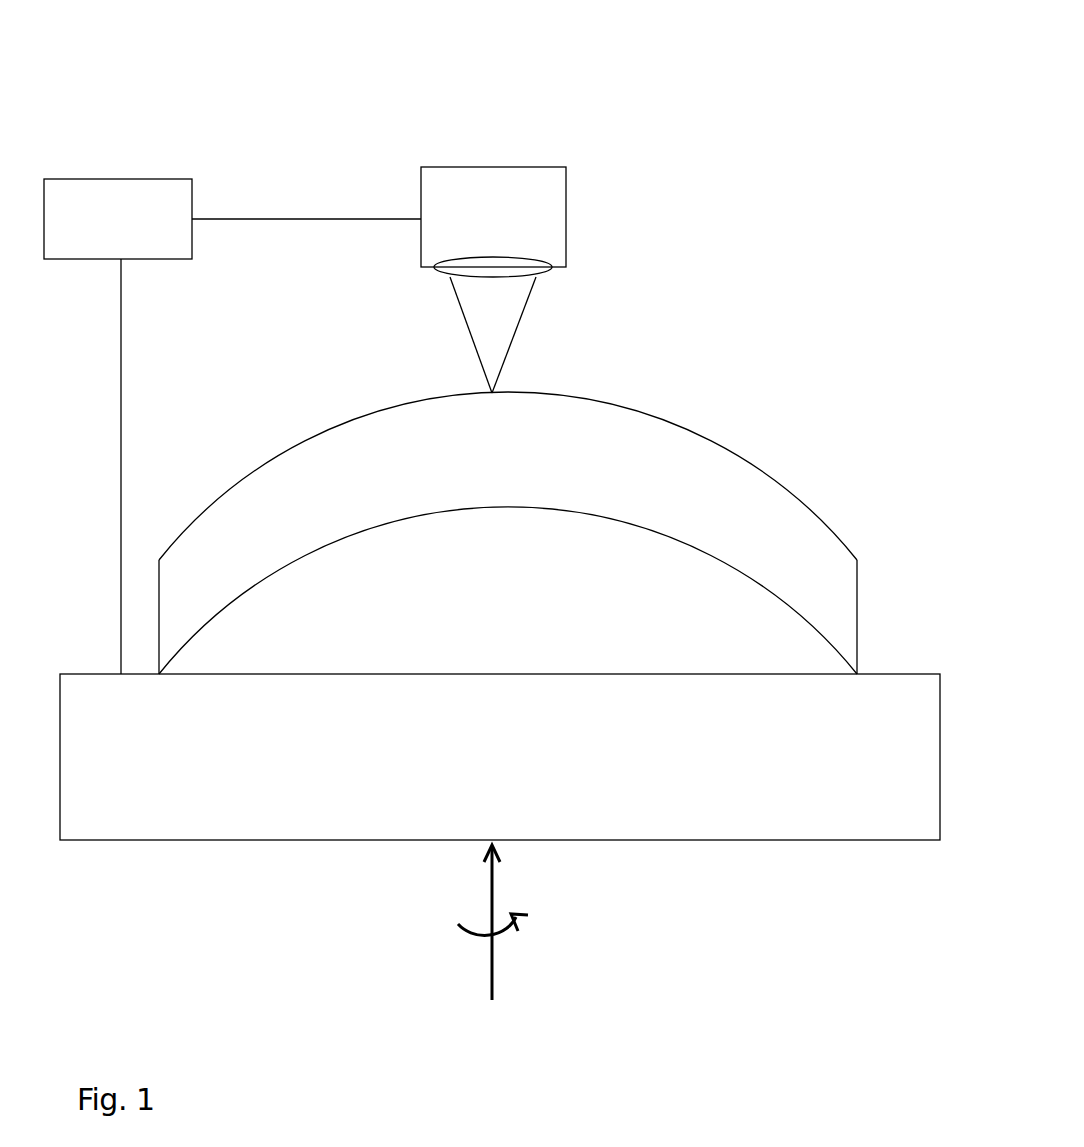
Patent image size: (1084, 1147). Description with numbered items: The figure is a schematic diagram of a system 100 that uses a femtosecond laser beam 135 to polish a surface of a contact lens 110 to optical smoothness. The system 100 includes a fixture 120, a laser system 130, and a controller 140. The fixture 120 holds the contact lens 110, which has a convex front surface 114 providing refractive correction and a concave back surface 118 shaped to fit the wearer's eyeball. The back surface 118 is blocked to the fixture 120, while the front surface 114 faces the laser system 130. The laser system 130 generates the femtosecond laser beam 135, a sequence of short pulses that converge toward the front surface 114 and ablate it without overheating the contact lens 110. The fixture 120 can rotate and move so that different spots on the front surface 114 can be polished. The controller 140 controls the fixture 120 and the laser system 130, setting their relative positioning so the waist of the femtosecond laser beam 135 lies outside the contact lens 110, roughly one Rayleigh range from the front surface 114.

The system 100 is at (493, 24).
The controller 140 is at (232, 426).
The laser system 130 is at (493, 222).
The femtosecond laser beam 135 is at (497, 335).
The contact lens 110 is at (559, 533).
The front surface 114 is at (767, 475).
The back surface 118 is at (740, 573).
The fixture 120 is at (500, 837).